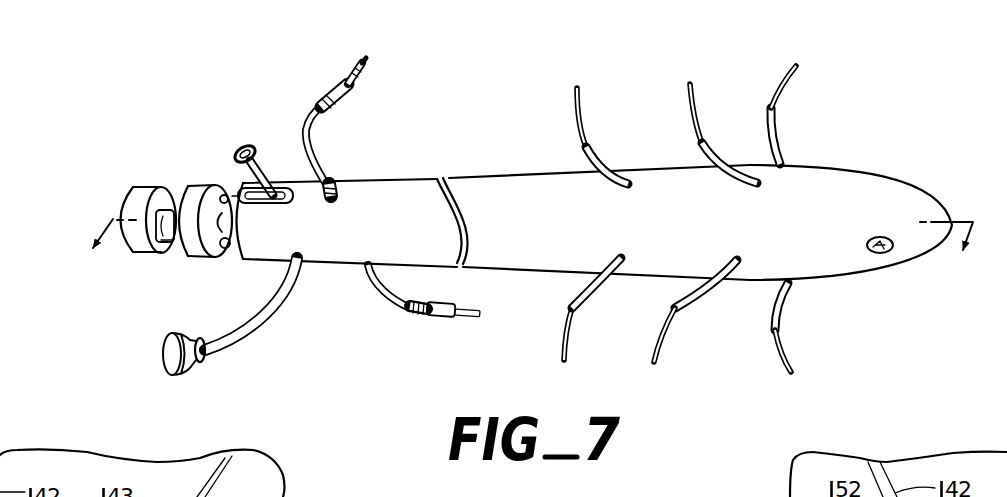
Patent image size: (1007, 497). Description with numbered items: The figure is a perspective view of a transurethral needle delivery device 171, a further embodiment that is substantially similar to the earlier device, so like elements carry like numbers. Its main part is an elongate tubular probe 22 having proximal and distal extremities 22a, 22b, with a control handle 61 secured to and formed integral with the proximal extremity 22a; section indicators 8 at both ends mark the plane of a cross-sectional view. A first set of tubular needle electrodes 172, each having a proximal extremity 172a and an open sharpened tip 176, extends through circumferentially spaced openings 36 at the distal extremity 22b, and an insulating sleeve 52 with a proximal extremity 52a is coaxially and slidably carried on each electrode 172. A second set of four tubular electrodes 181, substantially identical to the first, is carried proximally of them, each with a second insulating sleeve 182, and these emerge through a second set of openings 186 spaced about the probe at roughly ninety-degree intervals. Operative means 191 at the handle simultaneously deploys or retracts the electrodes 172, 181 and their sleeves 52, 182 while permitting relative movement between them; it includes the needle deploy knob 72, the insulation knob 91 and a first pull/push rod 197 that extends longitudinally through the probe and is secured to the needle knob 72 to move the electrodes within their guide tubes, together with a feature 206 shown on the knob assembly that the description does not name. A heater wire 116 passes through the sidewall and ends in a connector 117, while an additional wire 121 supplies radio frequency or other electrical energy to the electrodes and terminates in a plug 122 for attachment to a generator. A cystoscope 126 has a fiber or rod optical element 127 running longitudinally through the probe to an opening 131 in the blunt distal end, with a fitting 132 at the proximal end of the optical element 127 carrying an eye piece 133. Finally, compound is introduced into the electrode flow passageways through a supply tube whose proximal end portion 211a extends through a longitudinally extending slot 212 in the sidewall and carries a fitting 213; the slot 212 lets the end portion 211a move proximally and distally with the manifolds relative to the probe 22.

The section line 8- 8 is at (533, 218).
The probe 22 is at (530, 176).
The proximal extremity of probe 22a is at (417, 176).
The distal extremity of probe 22b is at (873, 167).
The openings 36 is at (748, 256).
The insulating sleeve 52 is at (784, 152).
The proximal extremity of insulating sleeve 52a is at (770, 297).
The control handle 61 is at (252, 263).
The needle deploy knob 72 is at (197, 215).
The insulation knob 91 is at (138, 215).
The wire 116 is at (322, 155).
The connector 117 is at (343, 97).
The wire 121 is at (390, 303).
The plug 122 is at (445, 317).
The cystoscope 126 is at (295, 303).
The optical element 127 is at (893, 247).
The opening 131 is at (877, 254).
The fitting 132 is at (203, 357).
The eye piece 133 is at (104, 356).
The transurethral needle delivery device 171 is at (893, 100).
The first tubular needle electrodes 172 is at (787, 95).
The proximal extremity of first electrode 172a is at (718, 66).
The sharpened tip 176 is at (798, 66).
The second tubular needle electrodes 181 is at (583, 117).
The second insulating sleeve 182 is at (603, 160).
The second openings 186 is at (560, 216).
The operative means 191 is at (166, 188).
The first pull/push rod 197 is at (186, 119).
The notch 206 is at (138, 178).
The proximal end portion of tube 211a is at (270, 205).
The slot 212 is at (277, 188).
The fitting 213 is at (248, 142).